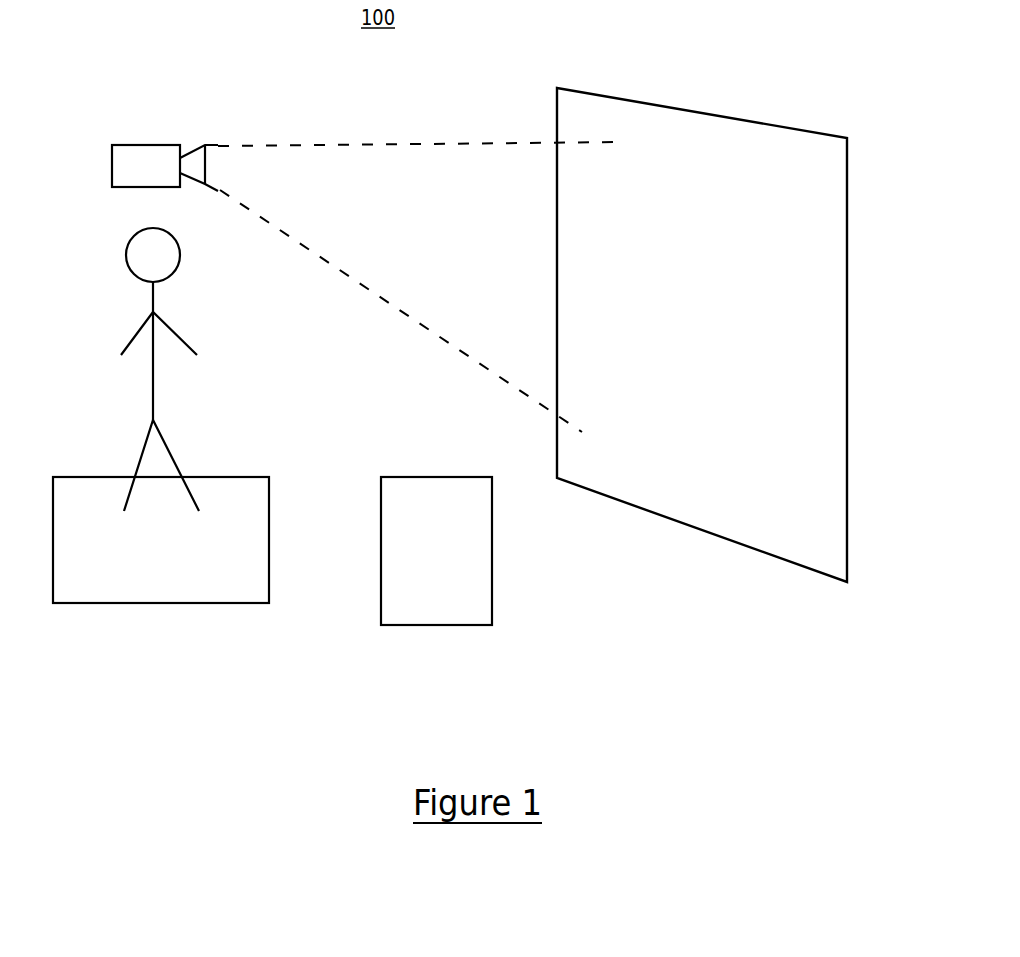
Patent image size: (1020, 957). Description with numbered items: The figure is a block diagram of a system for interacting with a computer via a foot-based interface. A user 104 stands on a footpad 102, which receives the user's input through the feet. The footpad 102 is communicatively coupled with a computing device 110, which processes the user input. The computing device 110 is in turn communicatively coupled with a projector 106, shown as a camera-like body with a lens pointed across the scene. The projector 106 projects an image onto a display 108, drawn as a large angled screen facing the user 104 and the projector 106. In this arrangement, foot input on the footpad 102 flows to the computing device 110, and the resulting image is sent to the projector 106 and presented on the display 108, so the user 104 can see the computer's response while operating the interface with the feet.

The footpad 102 is at (255, 540).
The user 104 is at (180, 255).
The projector 106 is at (162, 145).
The display 108 is at (835, 295).
The computing device 110 is at (452, 606).